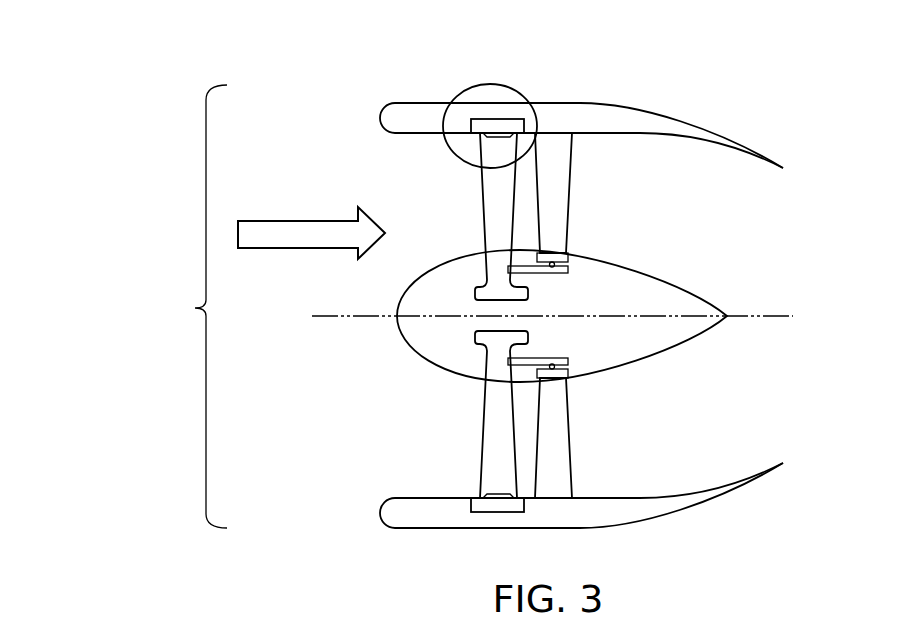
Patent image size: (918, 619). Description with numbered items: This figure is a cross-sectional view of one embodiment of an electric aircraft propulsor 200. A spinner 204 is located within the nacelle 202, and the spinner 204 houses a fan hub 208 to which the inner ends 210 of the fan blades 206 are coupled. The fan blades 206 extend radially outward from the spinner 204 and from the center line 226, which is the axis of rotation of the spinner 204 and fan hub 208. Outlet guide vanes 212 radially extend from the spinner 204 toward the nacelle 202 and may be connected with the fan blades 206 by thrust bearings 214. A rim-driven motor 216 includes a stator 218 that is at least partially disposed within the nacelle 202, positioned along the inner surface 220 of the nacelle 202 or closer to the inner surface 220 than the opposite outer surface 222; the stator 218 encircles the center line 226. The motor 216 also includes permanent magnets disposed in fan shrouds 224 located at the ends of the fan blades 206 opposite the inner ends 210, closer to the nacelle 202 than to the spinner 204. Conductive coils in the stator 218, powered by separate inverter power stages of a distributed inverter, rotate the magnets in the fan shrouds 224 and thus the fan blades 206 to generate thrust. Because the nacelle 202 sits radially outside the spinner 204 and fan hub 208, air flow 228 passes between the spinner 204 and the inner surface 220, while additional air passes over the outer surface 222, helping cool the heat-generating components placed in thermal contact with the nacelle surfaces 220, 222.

The propulsor 200 is at (195, 308).
The nacelle 202 is at (532, 289).
The spinner 204 is at (389, 349).
The fan blades 206 is at (477, 315).
The fan hub 208 is at (455, 289).
The inner ends 210 is at (477, 315).
The outlet guide vanes 212 is at (578, 212).
The thrust bearings 214 is at (586, 258).
The rim-driven motor 216 is at (527, 87).
The stator 218 is at (496, 119).
The inner surface 220 is at (596, 140).
The outer surface 222 is at (403, 95).
The fan shrouds 224 is at (482, 138).
The center line 226 is at (760, 319).
The air flow 228 is at (299, 221).